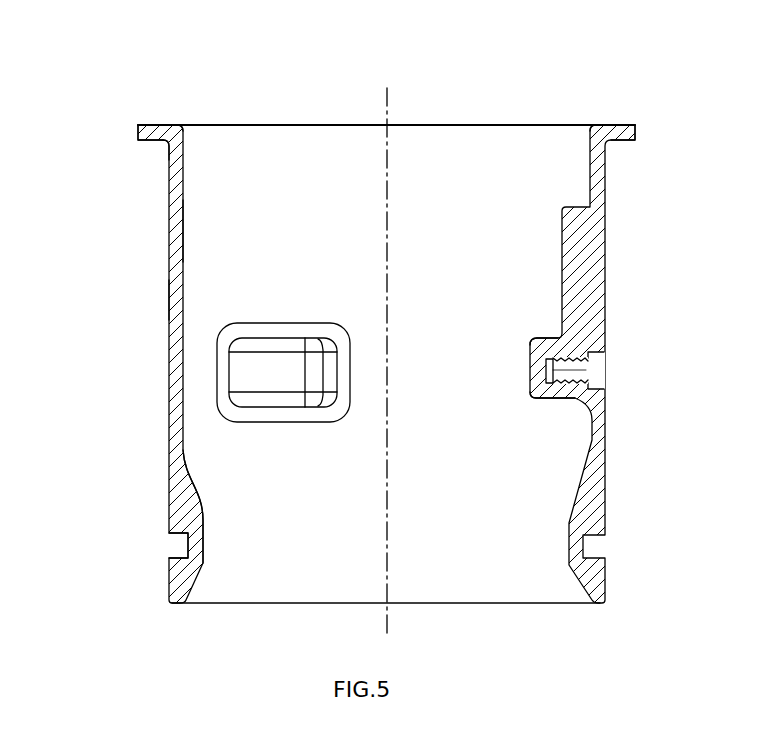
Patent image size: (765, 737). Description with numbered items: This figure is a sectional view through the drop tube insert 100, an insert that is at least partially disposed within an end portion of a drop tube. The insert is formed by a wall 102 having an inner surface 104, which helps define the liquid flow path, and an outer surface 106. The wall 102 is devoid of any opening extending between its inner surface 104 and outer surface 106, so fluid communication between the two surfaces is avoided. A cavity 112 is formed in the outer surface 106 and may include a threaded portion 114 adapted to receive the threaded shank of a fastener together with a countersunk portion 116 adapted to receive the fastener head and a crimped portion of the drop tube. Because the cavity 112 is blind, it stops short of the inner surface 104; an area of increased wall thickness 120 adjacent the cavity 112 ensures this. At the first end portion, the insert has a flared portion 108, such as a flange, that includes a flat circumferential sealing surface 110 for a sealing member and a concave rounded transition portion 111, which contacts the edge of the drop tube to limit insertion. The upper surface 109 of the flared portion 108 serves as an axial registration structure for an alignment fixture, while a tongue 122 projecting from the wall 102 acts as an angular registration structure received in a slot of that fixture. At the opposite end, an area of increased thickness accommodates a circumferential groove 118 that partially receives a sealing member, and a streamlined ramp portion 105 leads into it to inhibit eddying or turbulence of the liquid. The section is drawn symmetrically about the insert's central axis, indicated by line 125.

The drop tube insert 100 is at (516, 83).
The wall 102 is at (168, 255).
The inner surface 104 is at (190, 232).
The streamlined ramp portion 105 is at (196, 491).
The outer surface 106 is at (164, 298).
The flared portion 108 is at (155, 123).
The upper surface 109 is at (617, 122).
The circumferential sealing surface 110 is at (166, 147).
The transition portion 111 is at (163, 154).
The cavity 112 is at (591, 378).
The threaded portion 114 is at (550, 378).
The countersunk portion 116 is at (600, 357).
The circumferential groove 118 is at (180, 559).
The area of increased wall thickness 120 is at (282, 330).
The tongue 122 is at (558, 237).
The centerline axis 125 is at (389, 100).